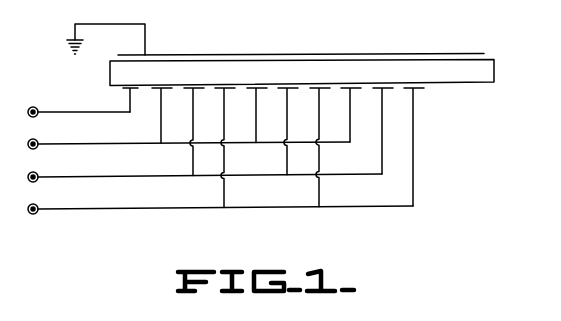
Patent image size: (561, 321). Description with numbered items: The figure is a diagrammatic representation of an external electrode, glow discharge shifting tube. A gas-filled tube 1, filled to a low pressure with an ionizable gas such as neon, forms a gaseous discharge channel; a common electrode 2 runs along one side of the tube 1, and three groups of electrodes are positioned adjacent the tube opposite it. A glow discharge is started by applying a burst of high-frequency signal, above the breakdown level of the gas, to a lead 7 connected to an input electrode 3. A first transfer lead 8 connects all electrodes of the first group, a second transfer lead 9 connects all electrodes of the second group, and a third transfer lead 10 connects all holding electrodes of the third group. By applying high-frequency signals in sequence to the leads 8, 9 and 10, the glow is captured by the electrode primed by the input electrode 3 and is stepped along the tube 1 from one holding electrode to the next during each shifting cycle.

The gas-filled tube 1 is at (486, 82).
The common electrode 2 is at (449, 54).
The input electrode 3 is at (122, 91).
The lead 7 is at (57, 112).
The first transfer lead 8 is at (62, 144).
The second transfer lead 9 is at (62, 178).
The third transfer lead 10 is at (62, 210).